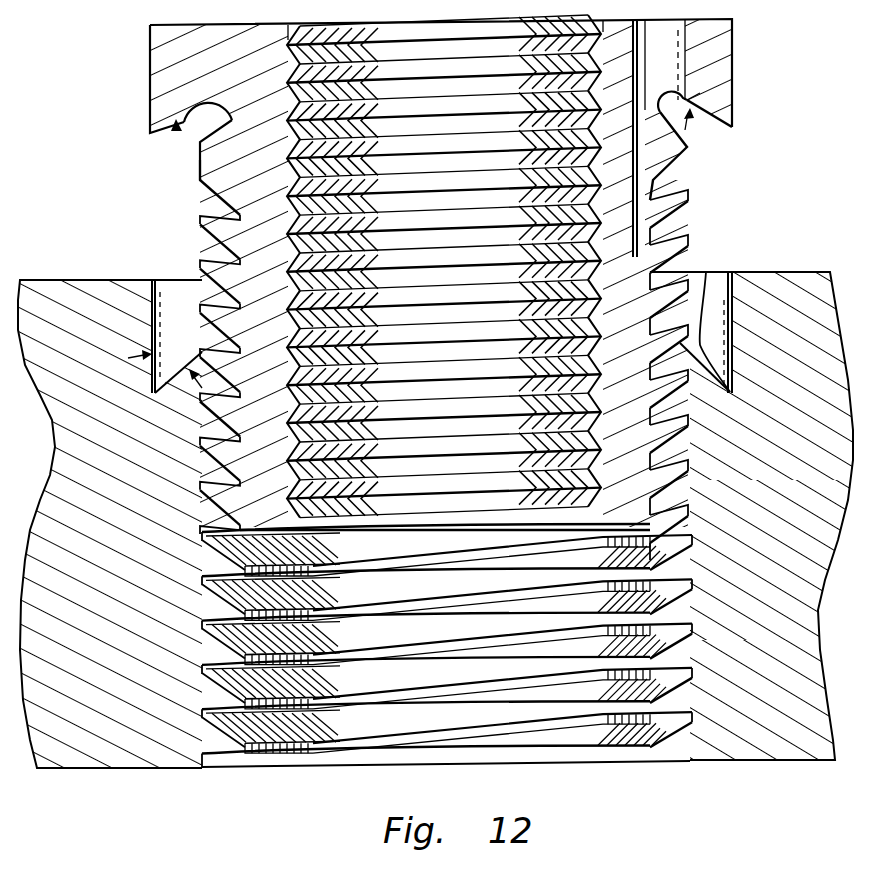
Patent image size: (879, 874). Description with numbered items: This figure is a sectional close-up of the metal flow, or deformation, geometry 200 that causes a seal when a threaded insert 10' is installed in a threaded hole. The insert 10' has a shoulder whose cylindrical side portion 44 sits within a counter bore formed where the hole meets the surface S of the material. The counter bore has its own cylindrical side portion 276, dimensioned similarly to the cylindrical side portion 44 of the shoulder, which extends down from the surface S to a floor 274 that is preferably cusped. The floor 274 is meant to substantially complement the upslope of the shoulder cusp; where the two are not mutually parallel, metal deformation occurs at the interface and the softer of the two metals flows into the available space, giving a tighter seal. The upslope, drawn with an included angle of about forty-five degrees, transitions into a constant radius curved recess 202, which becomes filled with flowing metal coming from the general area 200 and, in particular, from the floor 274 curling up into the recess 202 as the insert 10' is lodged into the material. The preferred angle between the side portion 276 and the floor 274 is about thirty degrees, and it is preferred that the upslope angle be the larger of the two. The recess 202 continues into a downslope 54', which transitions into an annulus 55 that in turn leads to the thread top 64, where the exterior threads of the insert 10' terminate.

The metal flow geometry 200 is at (178, 128).
The downslope 54' is at (188, 151).
The annulus 55 is at (197, 180).
The thread top 64 is at (199, 208).
The threaded insert 10' is at (436, 287).
The cylindrical side portion 44 is at (760, 87).
The constant radius curved recess 202 is at (702, 128).
The floor 274 is at (706, 272).
The cylindrical side portion 276 is at (722, 290).
The surface S is at (797, 272).